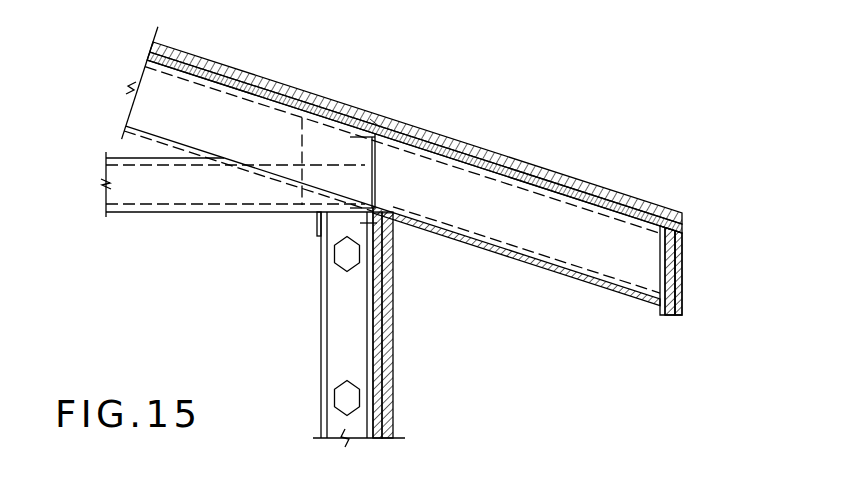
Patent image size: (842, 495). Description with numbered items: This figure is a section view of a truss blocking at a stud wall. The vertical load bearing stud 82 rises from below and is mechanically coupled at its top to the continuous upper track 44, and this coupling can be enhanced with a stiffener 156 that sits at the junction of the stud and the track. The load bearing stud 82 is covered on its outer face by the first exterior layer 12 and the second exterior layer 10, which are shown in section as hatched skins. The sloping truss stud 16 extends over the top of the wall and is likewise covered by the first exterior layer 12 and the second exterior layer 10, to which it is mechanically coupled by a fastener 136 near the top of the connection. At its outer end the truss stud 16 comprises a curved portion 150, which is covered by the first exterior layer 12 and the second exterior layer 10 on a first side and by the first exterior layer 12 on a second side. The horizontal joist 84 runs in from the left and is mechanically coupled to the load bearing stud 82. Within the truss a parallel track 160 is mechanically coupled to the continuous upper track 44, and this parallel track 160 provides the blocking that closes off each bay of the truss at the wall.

The second exterior layer 10 is at (578, 192).
The first exterior layer 12 is at (447, 132).
The truss stud 16 is at (120, 84).
The continuous upper track 44 is at (318, 228).
The load bearing stud 82 is at (327, 365).
The joist 84 is at (238, 212).
The fastener 136 is at (375, 123).
The curved portion 150 is at (675, 300).
The stiffener 156 is at (382, 235).
The parallel track 160 is at (377, 170).